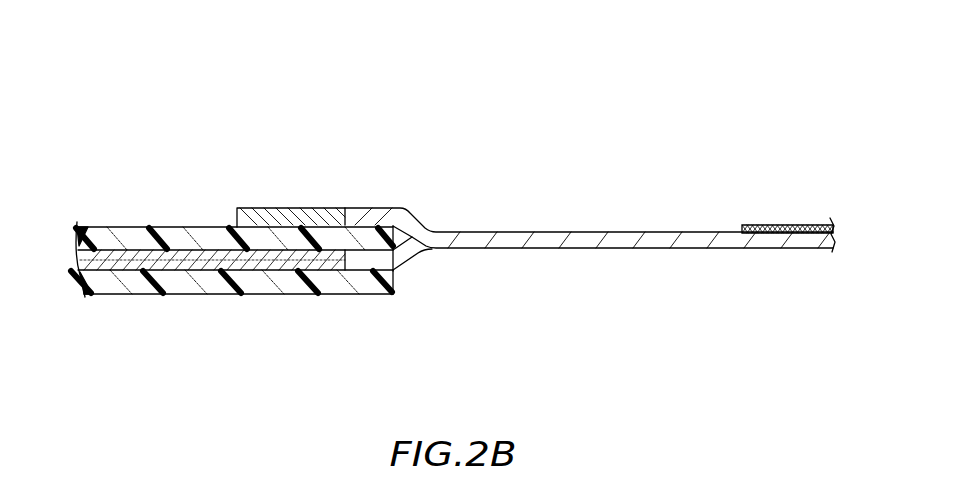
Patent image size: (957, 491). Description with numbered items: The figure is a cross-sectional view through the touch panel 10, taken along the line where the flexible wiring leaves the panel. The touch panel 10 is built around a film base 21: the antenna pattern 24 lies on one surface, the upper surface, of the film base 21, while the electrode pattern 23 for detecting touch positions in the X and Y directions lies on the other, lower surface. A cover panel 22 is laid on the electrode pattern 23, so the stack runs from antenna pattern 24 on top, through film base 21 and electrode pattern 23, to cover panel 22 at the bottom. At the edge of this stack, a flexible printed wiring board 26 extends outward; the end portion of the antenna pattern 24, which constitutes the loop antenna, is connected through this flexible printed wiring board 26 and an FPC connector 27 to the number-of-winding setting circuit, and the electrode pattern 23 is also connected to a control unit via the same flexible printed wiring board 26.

The touch panel 10 is at (363, 92).
The film base 21 is at (142, 236).
The cover panel 22 is at (184, 280).
The electrode pattern 23 is at (297, 272).
The antenna pattern 24 is at (299, 213).
The flexible printed wiring board 26 is at (607, 250).
The FPC connector 27 is at (786, 224).